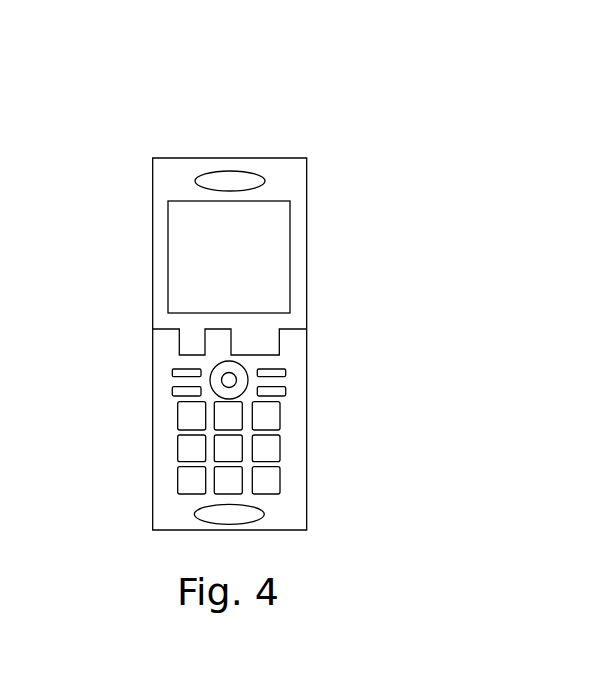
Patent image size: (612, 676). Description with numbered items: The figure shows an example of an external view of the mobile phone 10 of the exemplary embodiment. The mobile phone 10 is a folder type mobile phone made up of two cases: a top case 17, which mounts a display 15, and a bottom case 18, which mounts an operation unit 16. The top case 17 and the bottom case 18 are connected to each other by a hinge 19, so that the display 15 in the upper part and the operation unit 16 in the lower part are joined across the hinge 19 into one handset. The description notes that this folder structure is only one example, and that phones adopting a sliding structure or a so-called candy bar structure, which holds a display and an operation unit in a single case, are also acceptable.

The mobile phone 10 is at (239, 300).
The display 15 is at (168, 251).
The operation unit 16 is at (148, 370).
The top case 17 is at (307, 248).
The bottom case 18 is at (307, 433).
The hinge 19 is at (308, 346).